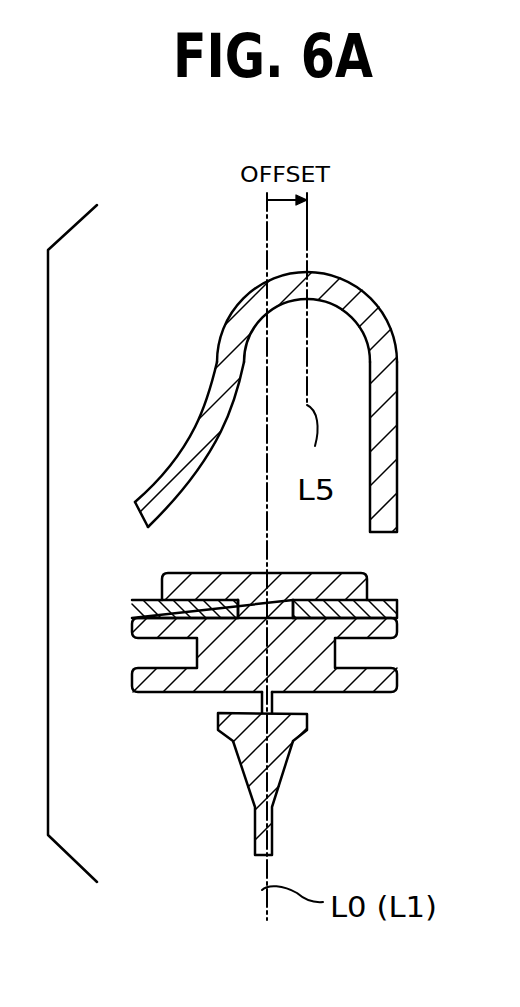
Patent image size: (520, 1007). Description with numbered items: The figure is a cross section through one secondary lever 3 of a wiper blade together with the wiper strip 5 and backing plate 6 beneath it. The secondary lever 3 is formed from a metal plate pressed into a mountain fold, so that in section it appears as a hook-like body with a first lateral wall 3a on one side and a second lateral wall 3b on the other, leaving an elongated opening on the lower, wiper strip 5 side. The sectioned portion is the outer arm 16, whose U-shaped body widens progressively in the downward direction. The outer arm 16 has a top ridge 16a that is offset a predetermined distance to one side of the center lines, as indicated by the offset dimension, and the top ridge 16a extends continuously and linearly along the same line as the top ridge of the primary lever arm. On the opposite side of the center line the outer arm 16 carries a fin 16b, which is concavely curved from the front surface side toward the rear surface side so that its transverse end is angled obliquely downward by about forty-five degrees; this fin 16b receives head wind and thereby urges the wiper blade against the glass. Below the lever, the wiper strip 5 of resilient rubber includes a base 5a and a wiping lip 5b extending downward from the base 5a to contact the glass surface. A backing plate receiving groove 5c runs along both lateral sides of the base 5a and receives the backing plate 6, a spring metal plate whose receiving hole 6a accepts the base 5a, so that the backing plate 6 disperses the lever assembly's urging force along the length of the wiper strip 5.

The secondary lever 3 is at (295, 387).
The first lateral wall 3a is at (397, 403).
The second lateral wall 3b is at (212, 363).
The outer arm 16 is at (247, 295).
The top ridge 16a is at (307, 272).
The fin 16b is at (192, 446).
The wiper strip 5 is at (250, 693).
The base 5a is at (162, 574).
The wiping lip 5b is at (282, 775).
The backing plate receiving groove 5c is at (313, 606).
The backing plate 6 is at (285, 583).
The receiving hole 6a is at (243, 610).